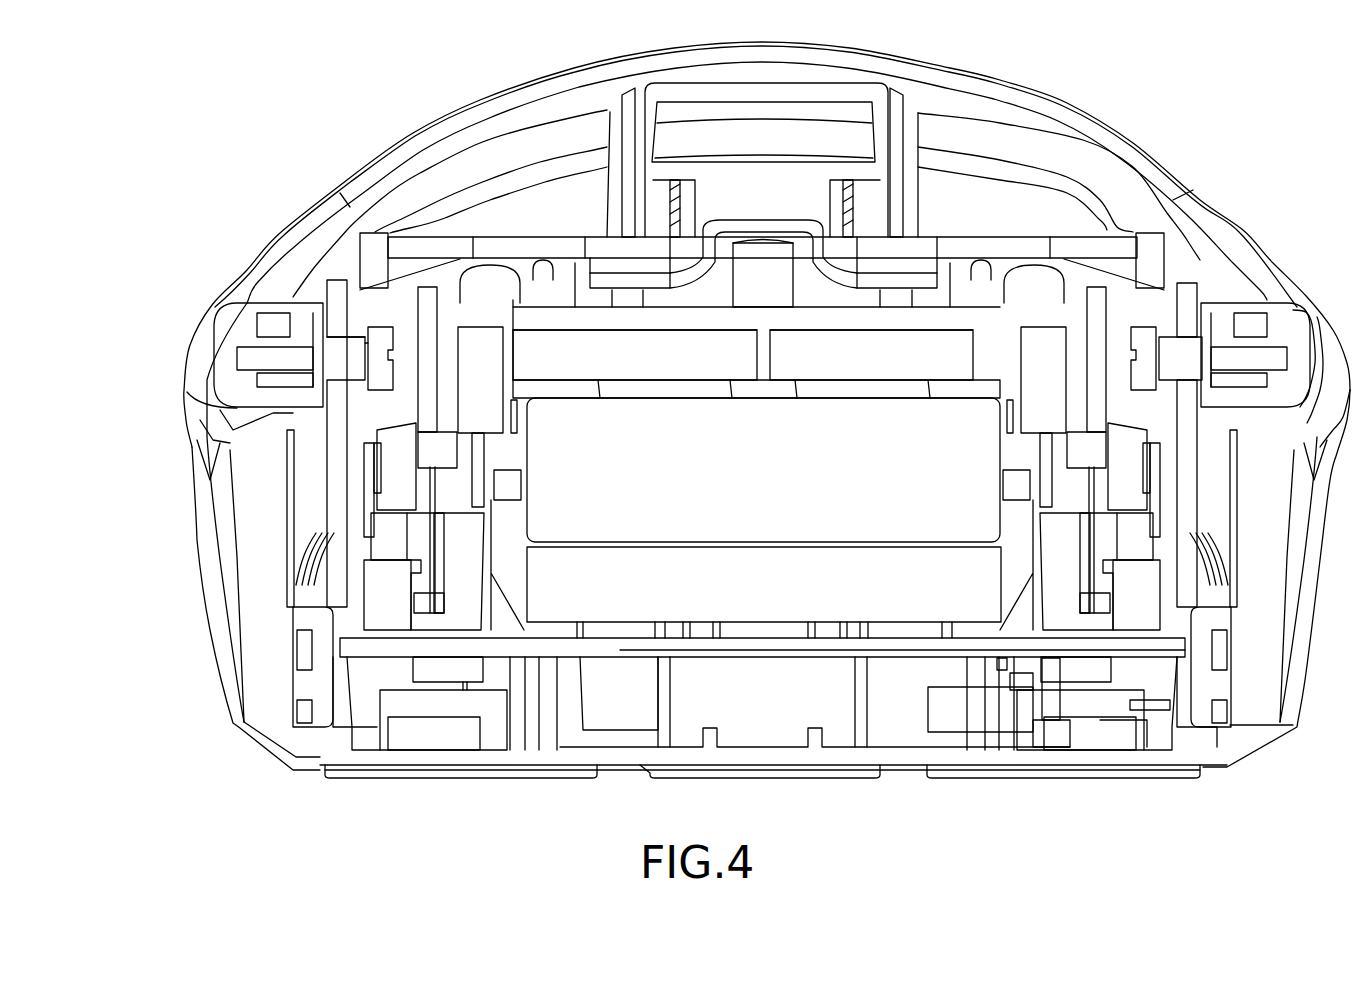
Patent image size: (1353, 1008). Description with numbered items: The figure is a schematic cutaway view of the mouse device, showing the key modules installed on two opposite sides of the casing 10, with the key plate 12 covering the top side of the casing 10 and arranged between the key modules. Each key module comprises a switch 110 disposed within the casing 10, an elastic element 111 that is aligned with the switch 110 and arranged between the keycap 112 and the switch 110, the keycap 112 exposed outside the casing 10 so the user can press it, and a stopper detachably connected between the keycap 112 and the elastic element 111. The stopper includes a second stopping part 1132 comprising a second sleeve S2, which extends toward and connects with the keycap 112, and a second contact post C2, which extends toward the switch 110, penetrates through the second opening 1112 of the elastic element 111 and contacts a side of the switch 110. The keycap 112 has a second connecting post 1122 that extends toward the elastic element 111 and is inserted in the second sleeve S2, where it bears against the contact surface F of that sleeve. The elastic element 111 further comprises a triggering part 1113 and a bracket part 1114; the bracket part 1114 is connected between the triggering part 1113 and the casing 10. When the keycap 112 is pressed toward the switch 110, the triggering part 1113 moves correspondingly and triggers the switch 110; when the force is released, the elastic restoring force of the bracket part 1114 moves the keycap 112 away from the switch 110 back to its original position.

The casing 10 is at (987, 90).
The key plate 12 is at (1188, 185).
The switch 110 is at (407, 345).
The elastic element 111 is at (202, 486).
The second opening 1112 is at (344, 380).
The triggering part 1113 is at (338, 305).
The bracket part 1114 is at (303, 584).
The keycap 112 is at (195, 403).
The second connecting post 1122 is at (277, 370).
The second stopping part 1132 is at (249, 241).
The second contact post C2 is at (355, 378).
The second sleeve S2 is at (308, 347).
The contact surface F is at (312, 350).